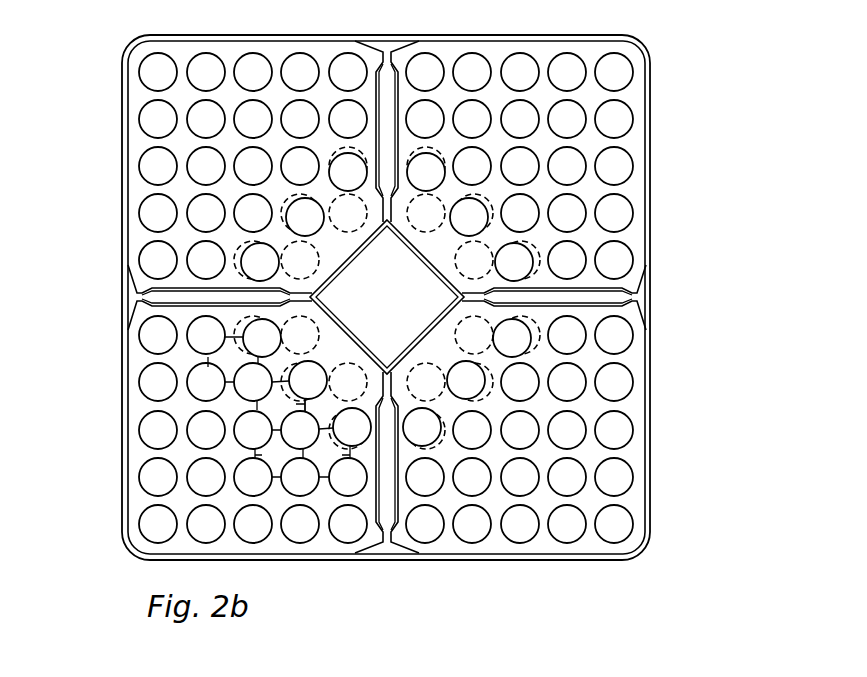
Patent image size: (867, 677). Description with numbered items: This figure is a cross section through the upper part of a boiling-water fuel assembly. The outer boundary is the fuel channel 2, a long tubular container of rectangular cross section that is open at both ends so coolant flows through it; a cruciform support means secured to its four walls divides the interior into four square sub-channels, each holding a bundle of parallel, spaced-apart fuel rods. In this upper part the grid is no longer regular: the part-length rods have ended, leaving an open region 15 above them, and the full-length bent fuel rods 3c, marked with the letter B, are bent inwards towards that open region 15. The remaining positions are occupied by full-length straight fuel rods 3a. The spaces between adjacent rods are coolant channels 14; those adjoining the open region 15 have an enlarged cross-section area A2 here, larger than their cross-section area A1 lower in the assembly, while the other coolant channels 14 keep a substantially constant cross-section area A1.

The fuel channel 2 is at (650, 157).
The full-length straight fuel rods 3a is at (622, 480).
The full-length bent fuel rods 3c is at (478, 299).
The coolant channels 14 is at (205, 407).
The open region 15 is at (333, 352).
The bent fuel rod marking B is at (523, 352).
The cross-section area A1 is at (278, 455).
The cross-section area A2 is at (279, 408).